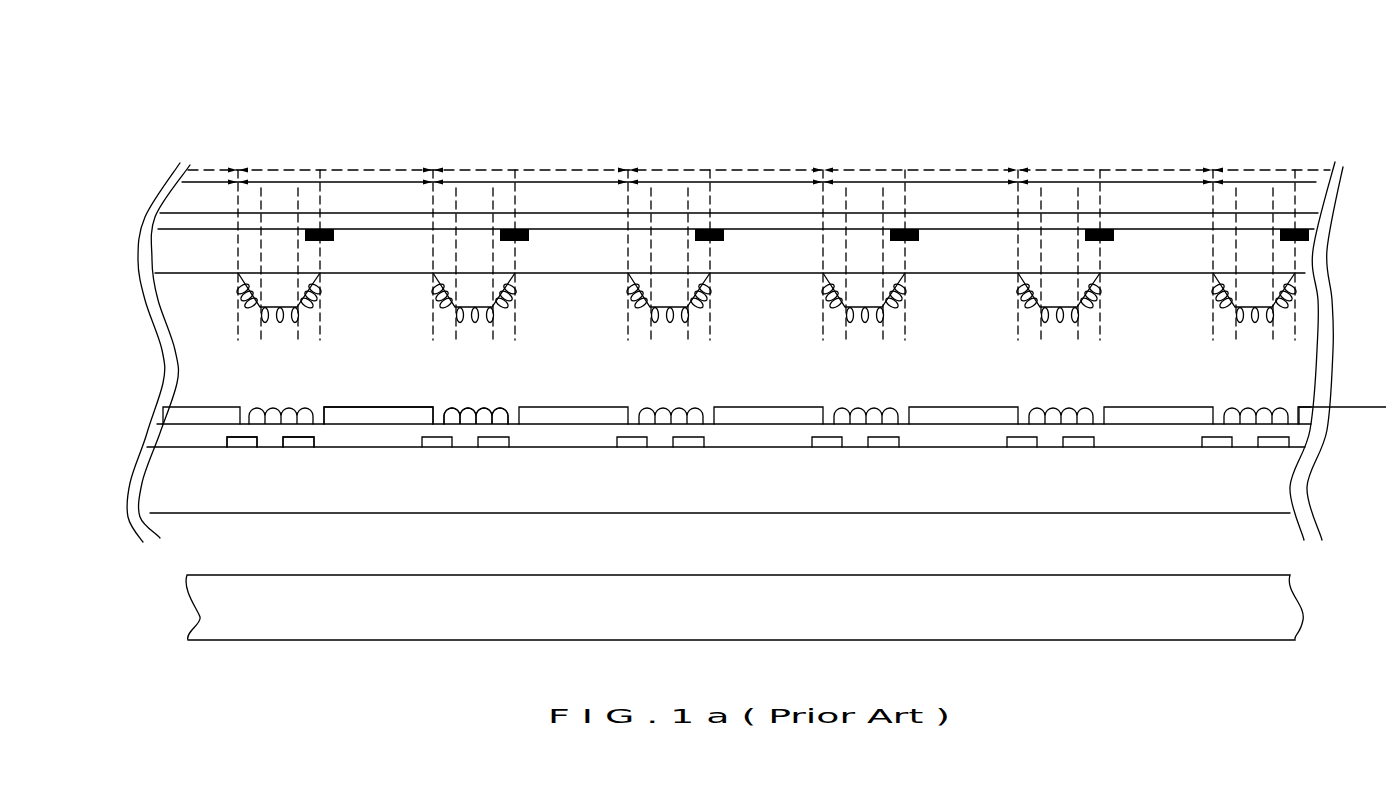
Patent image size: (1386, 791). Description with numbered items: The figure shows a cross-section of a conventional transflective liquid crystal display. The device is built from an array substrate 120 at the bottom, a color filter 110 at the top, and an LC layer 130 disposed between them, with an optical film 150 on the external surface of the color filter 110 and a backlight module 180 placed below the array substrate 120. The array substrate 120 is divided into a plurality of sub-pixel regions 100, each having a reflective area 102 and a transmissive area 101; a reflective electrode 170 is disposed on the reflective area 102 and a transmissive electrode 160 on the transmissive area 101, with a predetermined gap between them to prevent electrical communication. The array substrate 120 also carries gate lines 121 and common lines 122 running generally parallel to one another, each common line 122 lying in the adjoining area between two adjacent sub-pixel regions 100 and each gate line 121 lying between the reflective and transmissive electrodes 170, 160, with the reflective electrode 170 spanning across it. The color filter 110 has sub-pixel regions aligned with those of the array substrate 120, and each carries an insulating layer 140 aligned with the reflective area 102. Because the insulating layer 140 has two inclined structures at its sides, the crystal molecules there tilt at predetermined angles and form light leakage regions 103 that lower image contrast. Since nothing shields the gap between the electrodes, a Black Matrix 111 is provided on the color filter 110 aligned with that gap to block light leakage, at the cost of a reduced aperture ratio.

The sub-pixel region 100 is at (413, 168).
The transmissive area 101 is at (575, 182).
The reflective area 102 is at (472, 182).
The light leakage region 103 is at (253, 197).
The color filter 110 is at (760, 224).
The Black Matrix 111 is at (328, 220).
The array substrate 120 is at (766, 489).
The gate line 121 is at (300, 447).
The common line 122 is at (240, 447).
The LC layer 130 is at (1314, 348).
The insulating layer 140 is at (865, 290).
The optical film 150 is at (1163, 223).
The transmissive electrode 160 is at (393, 412).
The reflective electrode 170 is at (472, 412).
The backlight module 180 is at (1242, 622).